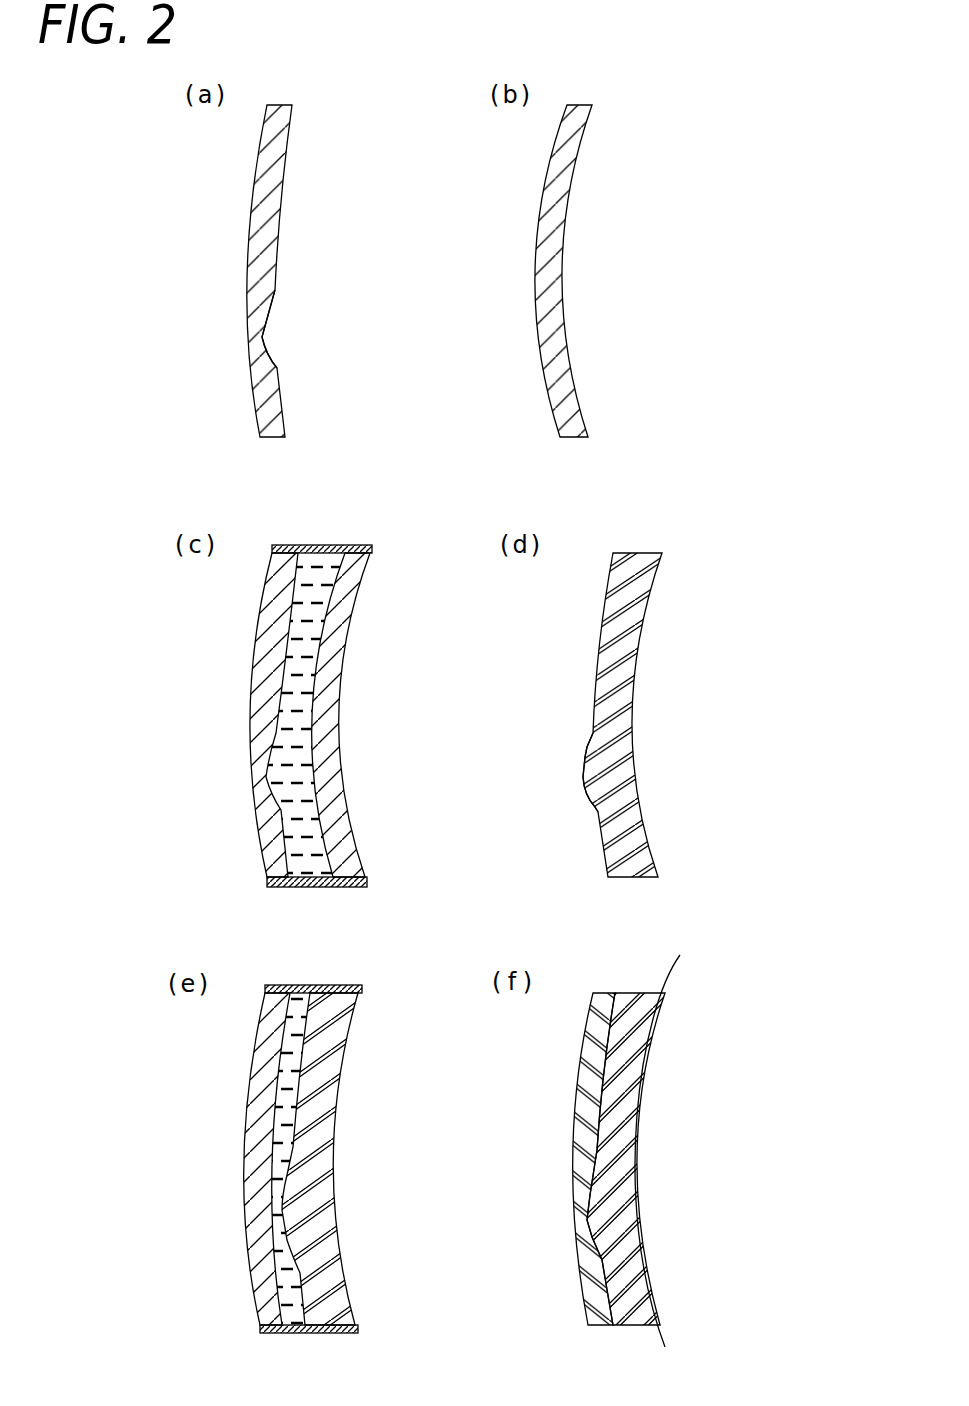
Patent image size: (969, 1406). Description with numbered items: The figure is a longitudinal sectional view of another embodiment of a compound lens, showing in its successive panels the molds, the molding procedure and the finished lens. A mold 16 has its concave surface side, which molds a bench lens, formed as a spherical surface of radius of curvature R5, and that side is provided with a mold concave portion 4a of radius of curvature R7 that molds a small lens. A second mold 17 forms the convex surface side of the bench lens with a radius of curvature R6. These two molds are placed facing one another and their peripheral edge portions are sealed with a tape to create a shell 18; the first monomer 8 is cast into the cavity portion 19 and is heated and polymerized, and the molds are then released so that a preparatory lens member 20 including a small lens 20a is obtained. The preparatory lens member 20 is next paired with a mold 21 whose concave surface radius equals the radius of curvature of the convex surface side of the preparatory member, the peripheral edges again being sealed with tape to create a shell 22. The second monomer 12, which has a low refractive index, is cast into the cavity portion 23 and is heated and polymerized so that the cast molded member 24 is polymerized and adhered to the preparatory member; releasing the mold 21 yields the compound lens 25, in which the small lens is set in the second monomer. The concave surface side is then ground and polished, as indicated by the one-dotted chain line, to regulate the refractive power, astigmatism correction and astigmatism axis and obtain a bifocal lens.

The mold 16 is at (258, 190).
The mold 17 is at (543, 235).
The radius of curvature R5 is at (322, 213).
The radius of curvature R6 is at (531, 190).
The radius of curvature R7 is at (310, 335).
The mold concave portion 4a is at (293, 353).
The first monomer 8 is at (313, 611).
The shell 18 is at (277, 716).
The cavity portion 19 is at (302, 753).
The preparatory lens member 20 is at (623, 638).
The small lens 20a is at (578, 749).
The second monomer 12 is at (282, 1055).
The mold 21 is at (252, 1127).
The shell 22 is at (280, 1159).
The cavity portion 23 is at (287, 1282).
The cast molded member 24 is at (580, 1140).
The compound lens 25 is at (643, 1151).